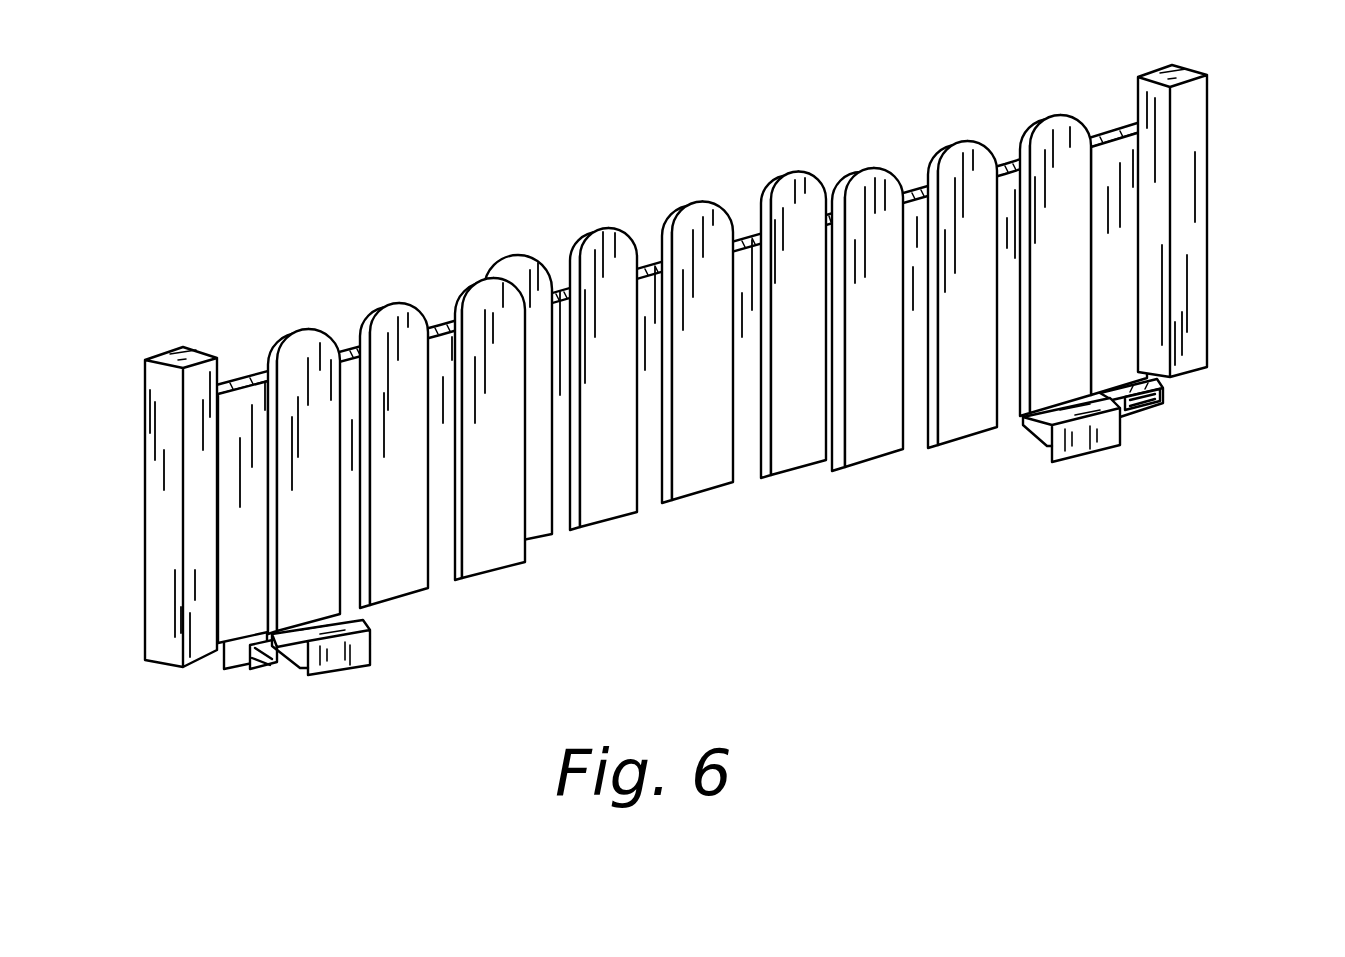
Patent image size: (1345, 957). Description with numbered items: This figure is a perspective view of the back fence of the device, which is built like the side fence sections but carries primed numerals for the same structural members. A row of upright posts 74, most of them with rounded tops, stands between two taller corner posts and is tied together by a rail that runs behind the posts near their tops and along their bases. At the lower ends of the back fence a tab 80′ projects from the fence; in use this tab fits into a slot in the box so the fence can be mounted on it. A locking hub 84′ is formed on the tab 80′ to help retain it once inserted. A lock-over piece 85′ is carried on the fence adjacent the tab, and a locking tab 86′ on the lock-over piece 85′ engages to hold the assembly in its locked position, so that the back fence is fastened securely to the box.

The fence post 74 is at (388, 305).
The tab 80′ is at (255, 672).
The locking hub 84′ is at (250, 672).
The lock-over piece 85′ is at (372, 677).
The locking tab 86′ is at (288, 672).